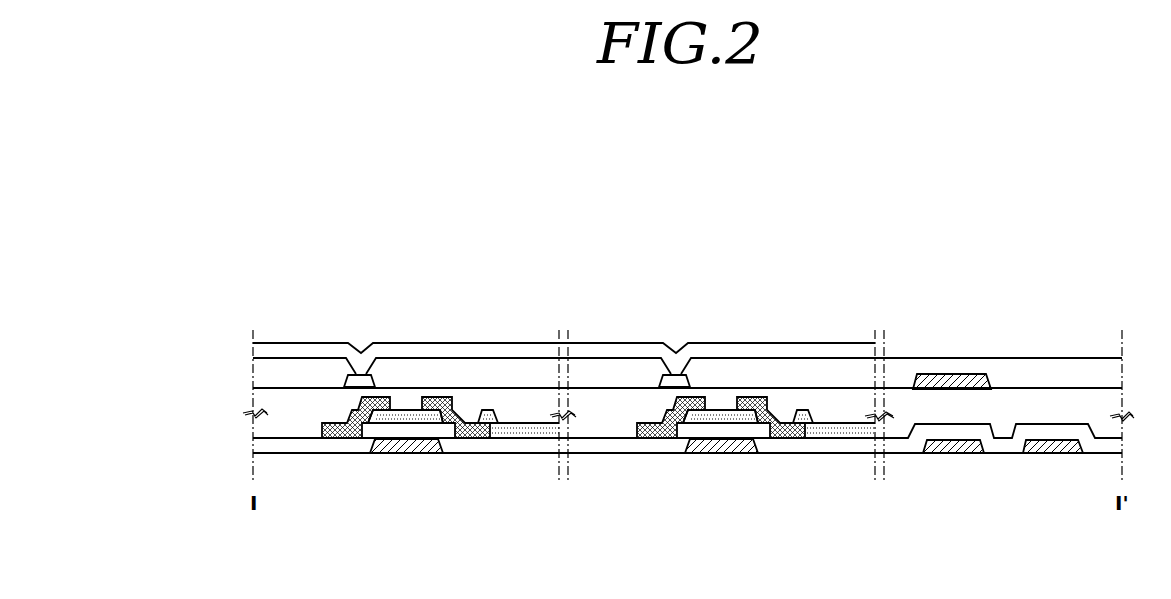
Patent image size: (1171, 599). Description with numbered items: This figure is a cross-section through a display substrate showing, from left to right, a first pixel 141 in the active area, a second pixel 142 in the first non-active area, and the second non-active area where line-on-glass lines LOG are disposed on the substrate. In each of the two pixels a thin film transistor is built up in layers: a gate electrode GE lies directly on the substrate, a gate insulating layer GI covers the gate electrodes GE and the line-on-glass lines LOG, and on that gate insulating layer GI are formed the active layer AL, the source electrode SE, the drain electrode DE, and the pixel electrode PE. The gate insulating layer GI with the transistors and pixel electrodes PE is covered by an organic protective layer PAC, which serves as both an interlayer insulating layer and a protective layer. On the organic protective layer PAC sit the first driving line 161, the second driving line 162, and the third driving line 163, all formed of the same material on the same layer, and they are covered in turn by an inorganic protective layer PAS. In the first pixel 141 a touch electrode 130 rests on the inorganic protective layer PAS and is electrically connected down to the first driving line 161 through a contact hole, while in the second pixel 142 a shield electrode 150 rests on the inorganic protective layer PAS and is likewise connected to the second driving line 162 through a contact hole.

The touch electrode 130 is at (503, 352).
The shield electrode 150 is at (818, 352).
The first pixel 141 is at (468, 246).
The second pixel 142 is at (740, 248).
The first driving line 161 is at (351, 387).
The second driving line 162 is at (666, 387).
The third driving line 163 is at (953, 374).
The source electrode SE is at (366, 396).
The drain electrode DE is at (462, 438).
The gate electrode GE is at (391, 447).
The gate insulating layer GI is at (366, 441).
The active layer AL is at (407, 410).
The pixel electrode PE is at (498, 435).
The inorganic protective layer PAS is at (262, 366).
The organic protective layer PAC is at (262, 402).
The line-on-glass line LOG is at (952, 450).